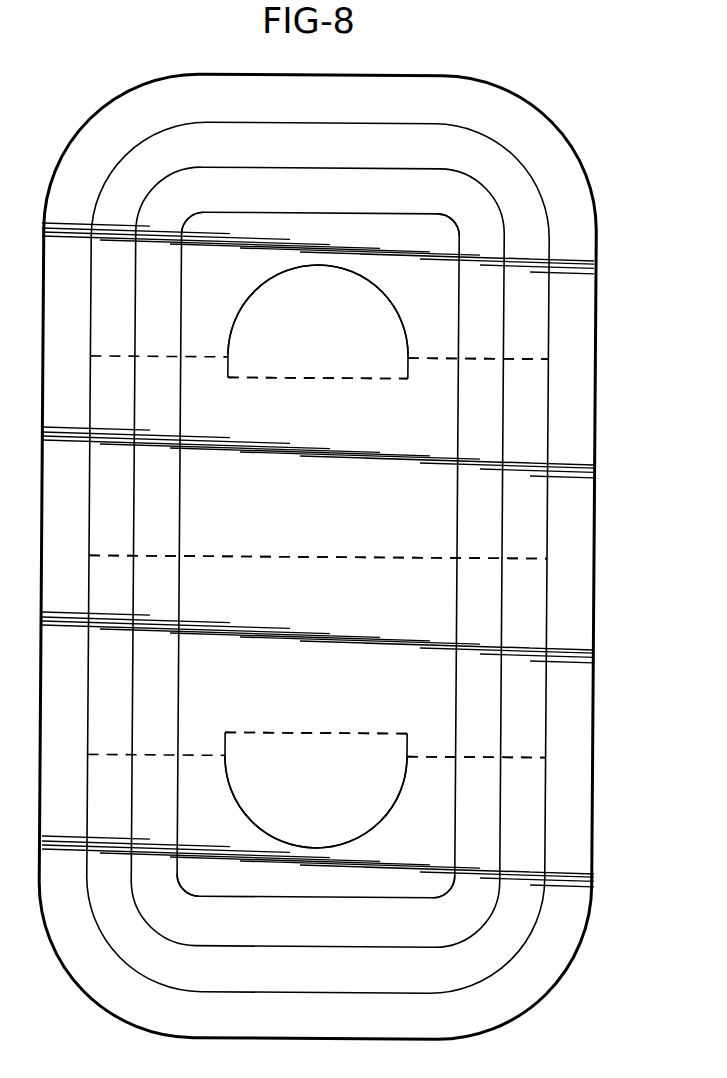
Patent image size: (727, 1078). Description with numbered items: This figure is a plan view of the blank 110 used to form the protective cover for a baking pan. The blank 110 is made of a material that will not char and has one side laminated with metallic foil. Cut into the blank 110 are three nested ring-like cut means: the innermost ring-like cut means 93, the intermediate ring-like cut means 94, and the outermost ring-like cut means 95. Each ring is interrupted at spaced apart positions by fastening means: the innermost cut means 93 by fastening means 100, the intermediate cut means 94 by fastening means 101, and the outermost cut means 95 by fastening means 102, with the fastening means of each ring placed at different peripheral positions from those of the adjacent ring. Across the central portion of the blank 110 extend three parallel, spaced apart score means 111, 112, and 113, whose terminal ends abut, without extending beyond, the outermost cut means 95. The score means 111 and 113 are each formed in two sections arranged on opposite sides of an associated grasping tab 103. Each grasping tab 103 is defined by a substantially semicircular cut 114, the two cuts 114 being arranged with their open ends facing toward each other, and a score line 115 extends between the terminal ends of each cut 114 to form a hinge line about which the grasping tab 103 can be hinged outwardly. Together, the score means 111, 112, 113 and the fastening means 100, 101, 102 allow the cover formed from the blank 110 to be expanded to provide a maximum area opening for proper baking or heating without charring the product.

The blank 110 is at (623, 269).
The fastening means 102 is at (128, 157).
The ring-like cut means 95 is at (307, 124).
The ring-like cut means 94 is at (290, 168).
The ring-like cut means 93 is at (262, 213).
The fastening means 100 is at (192, 222).
The fastening means 101 is at (133, 354).
The grasping tab 103 is at (342, 332).
The arcuate cut means 114 is at (389, 299).
The score line 115 is at (337, 380).
The score means 113 is at (528, 362).
The score means 112 is at (510, 560).
The score means 111 is at (525, 760).